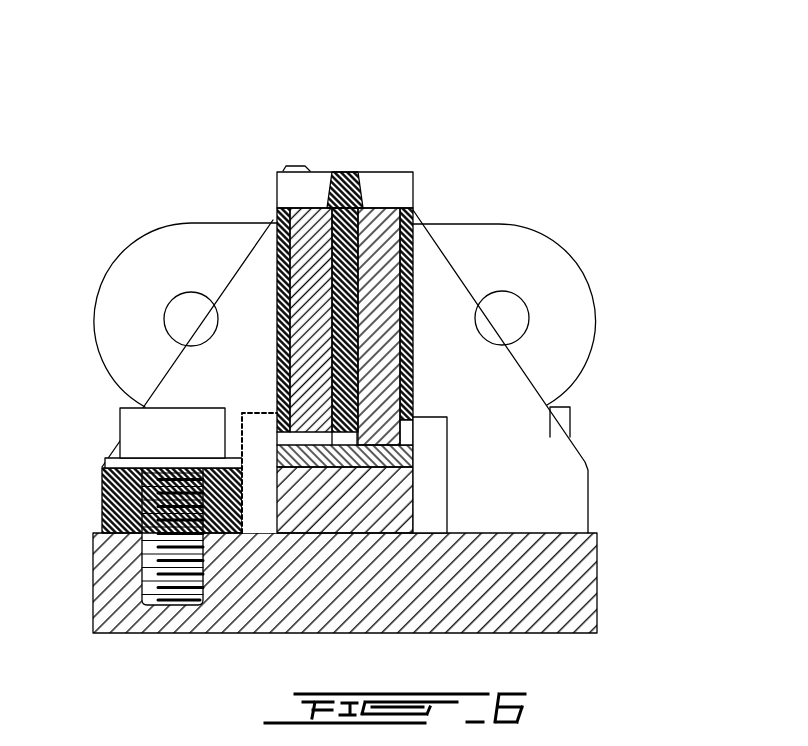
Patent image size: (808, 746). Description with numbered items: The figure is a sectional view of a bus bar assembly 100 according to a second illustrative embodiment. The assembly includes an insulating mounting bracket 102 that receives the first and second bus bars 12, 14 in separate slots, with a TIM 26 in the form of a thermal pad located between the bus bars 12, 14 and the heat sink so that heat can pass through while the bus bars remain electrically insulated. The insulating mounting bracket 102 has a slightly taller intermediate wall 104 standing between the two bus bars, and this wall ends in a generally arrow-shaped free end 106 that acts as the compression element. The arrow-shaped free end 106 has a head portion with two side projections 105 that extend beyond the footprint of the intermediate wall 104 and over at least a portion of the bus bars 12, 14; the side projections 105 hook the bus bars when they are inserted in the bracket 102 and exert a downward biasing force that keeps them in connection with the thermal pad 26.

The bus bar assembly 100 is at (648, 172).
The insulating mounting bracket 102 is at (428, 240).
The intermediate wall 104 is at (385, 240).
The side projections 105 is at (345, 232).
The arrow-shaped free end 106 is at (355, 200).
The first bus bar 12 is at (310, 250).
The second bus bar 14 is at (375, 323).
The TIM (thermal pad) 26 is at (398, 456).